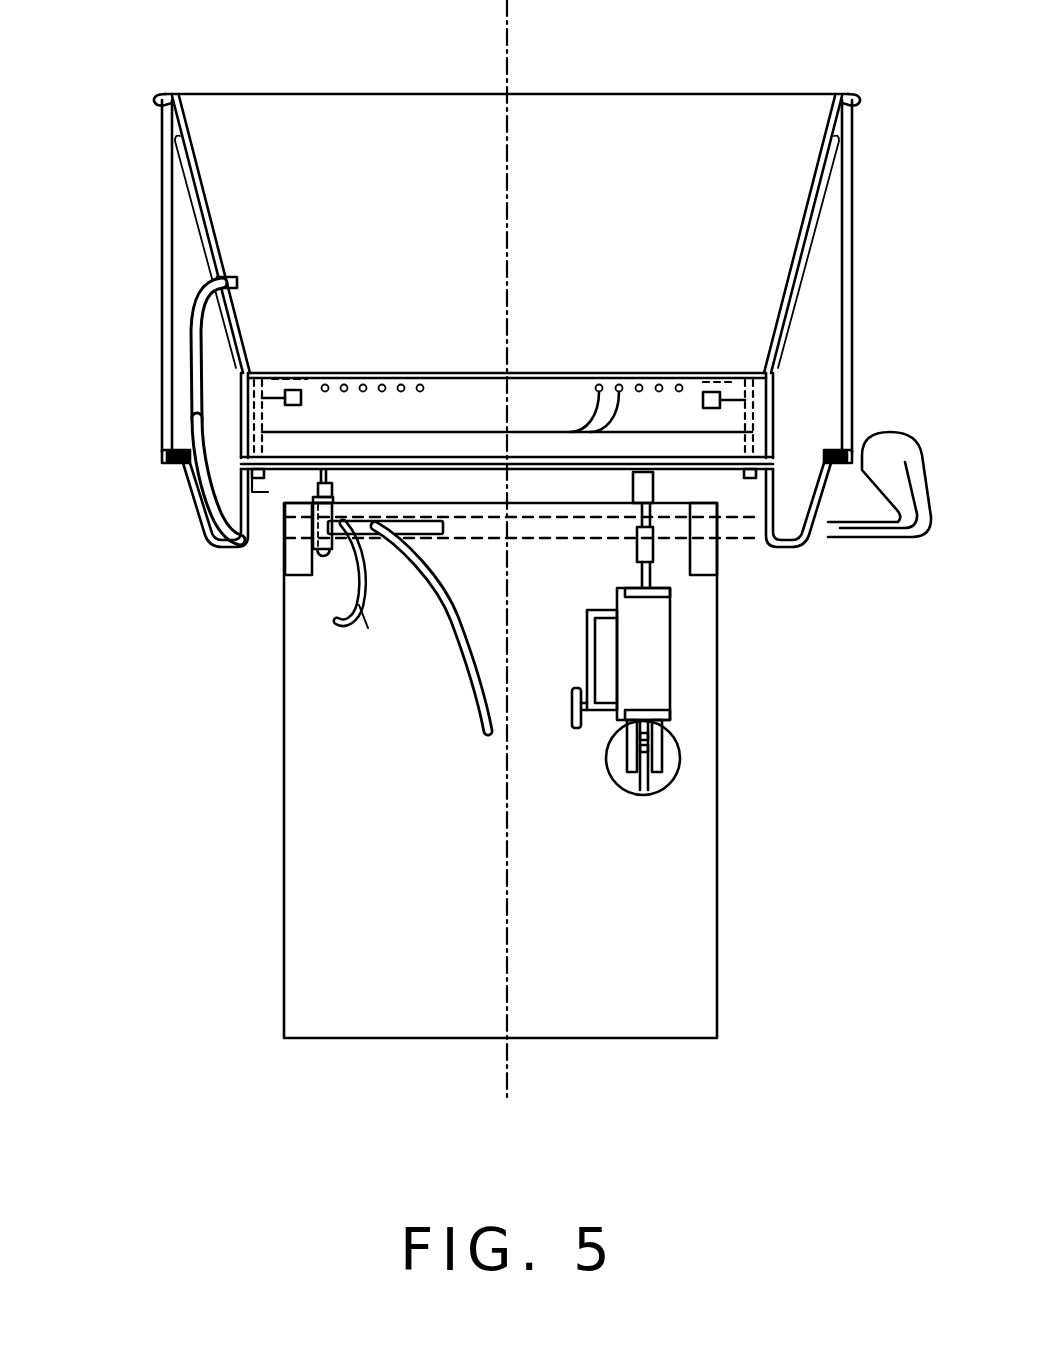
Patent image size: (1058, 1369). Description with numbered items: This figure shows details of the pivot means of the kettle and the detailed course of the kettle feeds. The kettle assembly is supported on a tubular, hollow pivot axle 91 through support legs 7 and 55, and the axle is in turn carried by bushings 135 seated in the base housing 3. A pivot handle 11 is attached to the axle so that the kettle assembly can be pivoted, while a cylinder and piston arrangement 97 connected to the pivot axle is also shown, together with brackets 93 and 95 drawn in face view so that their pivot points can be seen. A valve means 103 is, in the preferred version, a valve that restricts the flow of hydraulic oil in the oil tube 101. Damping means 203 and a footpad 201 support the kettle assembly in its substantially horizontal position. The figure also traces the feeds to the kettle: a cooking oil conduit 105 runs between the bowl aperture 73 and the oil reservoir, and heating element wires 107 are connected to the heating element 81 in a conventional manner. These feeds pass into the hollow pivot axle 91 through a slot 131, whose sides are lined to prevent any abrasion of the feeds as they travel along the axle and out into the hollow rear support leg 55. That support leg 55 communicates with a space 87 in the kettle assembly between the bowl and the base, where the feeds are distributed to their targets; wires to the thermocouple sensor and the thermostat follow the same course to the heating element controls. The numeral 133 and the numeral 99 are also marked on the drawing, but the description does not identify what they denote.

The base housing 3 is at (461, 912).
The support leg 7 is at (817, 504).
The pivot handle 11 is at (887, 541).
The rear support leg 55 is at (183, 478).
The bowl aperture 73 is at (238, 282).
The heating element 81 is at (402, 376).
The space 87 is at (267, 492).
The hollow pivot axle 91 is at (604, 516).
The bracket 93 is at (656, 543).
The bracket 95 is at (648, 790).
The cylinder and piston arrangement 97 is at (670, 683).
The actuator stem 99 is at (641, 574).
The oil tube 101 is at (587, 650).
The valve means 103 is at (578, 728).
The cooking oil conduit 105 is at (187, 323).
The heating element wires 107 is at (472, 432).
The slot 131 is at (461, 486).
The hose section 133 is at (197, 455).
The bushings 135 is at (285, 584).
The footpad 201 is at (623, 470).
The damping means 203 is at (308, 484).